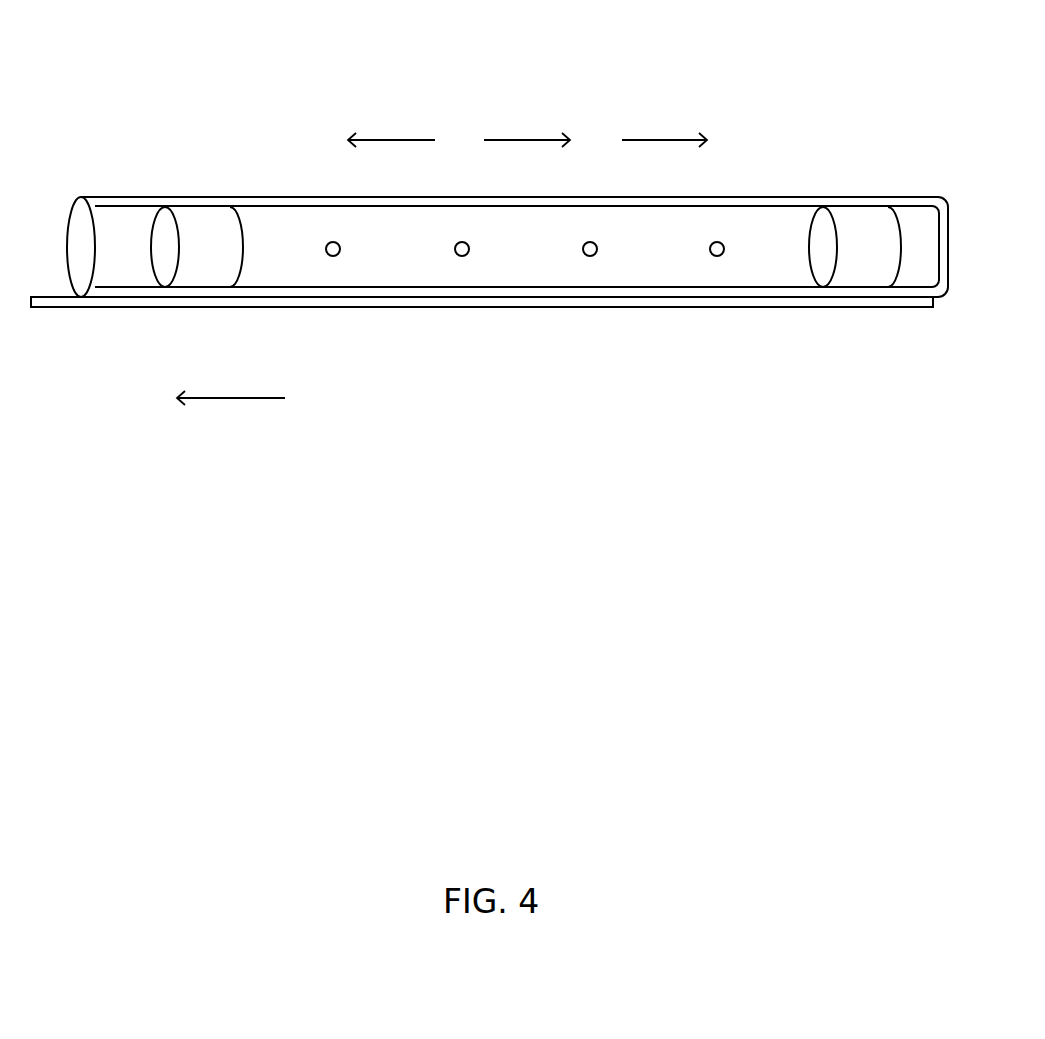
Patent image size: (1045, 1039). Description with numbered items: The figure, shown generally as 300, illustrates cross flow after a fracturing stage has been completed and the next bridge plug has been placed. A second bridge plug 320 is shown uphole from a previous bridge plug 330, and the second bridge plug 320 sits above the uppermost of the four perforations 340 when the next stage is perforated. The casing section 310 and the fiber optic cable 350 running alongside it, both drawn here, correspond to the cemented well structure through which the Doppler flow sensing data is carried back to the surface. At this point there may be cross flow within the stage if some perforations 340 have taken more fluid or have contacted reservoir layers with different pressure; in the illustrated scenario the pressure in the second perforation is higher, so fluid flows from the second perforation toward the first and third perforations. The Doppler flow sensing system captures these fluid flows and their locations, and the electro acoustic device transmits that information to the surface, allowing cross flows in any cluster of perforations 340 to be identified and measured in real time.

The cross flow scenario 300 is at (557, 62).
The tubular housing 310 is at (130, 196).
The second bridge plug 320 is at (193, 217).
The previous bridge plug 330 is at (853, 220).
The perforations 340 is at (331, 256).
The plate / substrate 350 is at (60, 308).